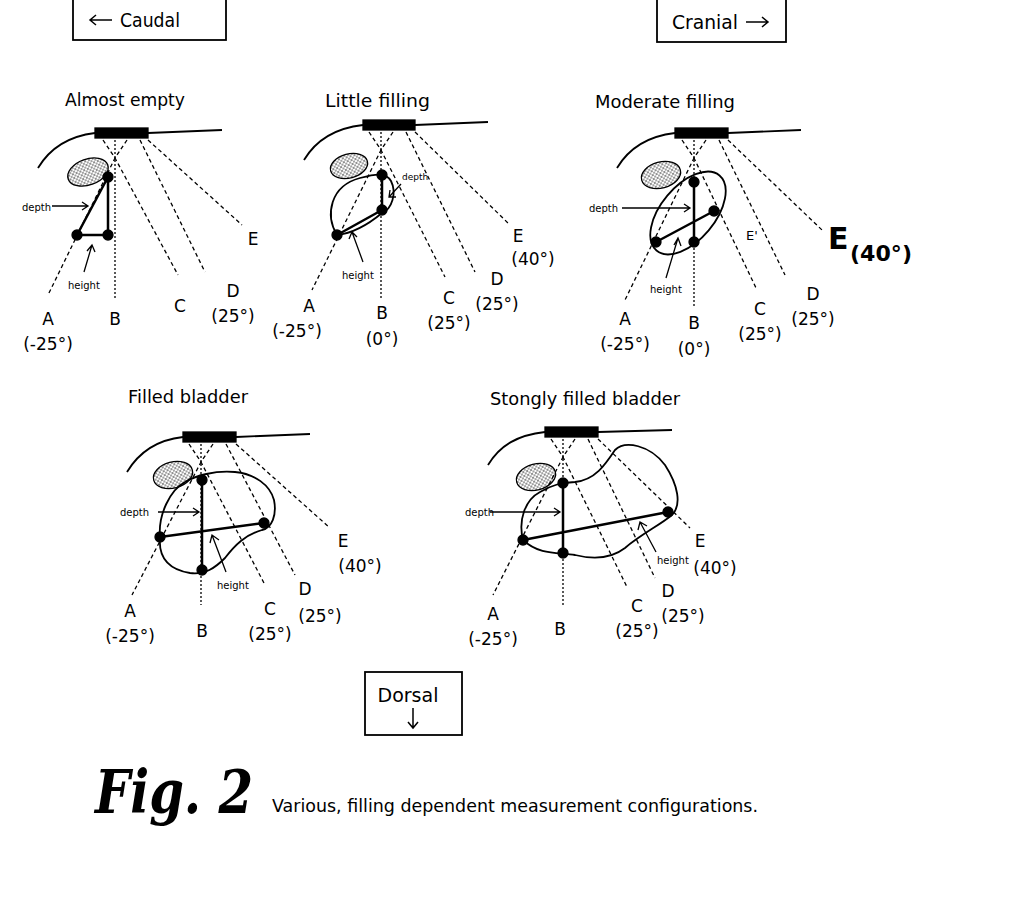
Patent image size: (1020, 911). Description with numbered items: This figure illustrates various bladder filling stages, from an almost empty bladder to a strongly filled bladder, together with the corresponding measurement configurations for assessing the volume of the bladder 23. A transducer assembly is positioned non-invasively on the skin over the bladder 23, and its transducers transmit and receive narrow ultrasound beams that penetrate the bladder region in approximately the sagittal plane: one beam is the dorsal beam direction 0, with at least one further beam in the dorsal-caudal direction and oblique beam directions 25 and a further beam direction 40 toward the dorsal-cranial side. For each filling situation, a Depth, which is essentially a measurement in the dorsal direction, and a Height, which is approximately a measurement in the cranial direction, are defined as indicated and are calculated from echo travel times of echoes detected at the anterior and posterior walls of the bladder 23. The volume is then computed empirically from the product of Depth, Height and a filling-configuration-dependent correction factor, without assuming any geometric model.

The bladder 23 is at (612, 427).
The 25 degree measurement direction 25 is at (152, 240).
The 40 degree measurement direction 40 is at (219, 206).
The 0 degree measurement direction 0 is at (115, 248).